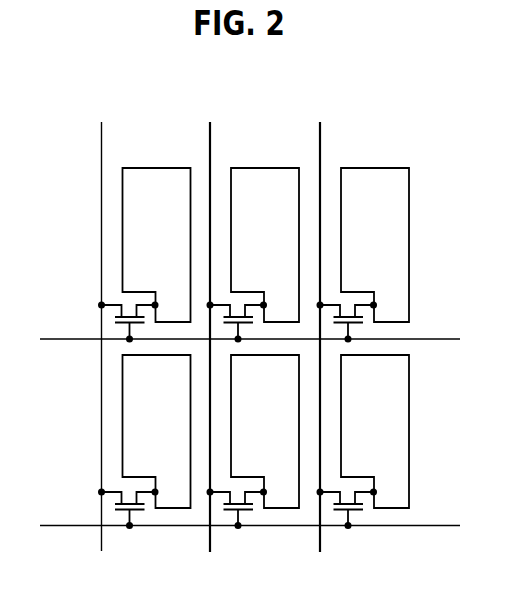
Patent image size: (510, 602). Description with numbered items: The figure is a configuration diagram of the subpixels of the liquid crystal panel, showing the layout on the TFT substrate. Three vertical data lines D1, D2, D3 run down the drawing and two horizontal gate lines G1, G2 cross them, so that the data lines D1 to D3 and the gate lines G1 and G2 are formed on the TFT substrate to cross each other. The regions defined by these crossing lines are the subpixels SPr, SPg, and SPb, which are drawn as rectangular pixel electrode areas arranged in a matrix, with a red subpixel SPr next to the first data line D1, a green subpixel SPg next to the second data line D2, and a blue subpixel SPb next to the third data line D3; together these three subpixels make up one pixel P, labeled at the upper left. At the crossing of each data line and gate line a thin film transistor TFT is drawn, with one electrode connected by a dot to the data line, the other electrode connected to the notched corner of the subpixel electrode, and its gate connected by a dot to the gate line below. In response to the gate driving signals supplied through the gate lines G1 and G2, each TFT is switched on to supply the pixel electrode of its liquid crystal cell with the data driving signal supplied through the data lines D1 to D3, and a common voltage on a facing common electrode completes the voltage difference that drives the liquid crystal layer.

The pixel P is at (36, 164).
The subpixel SPr is at (172, 247).
The subpixel SPg is at (284, 247).
The subpixel SPb is at (392, 247).
The thin film transistor TFT is at (113, 318).
The data line D1 is at (100, 324).
The data line D2 is at (210, 324).
The data line D3 is at (318, 324).
The gate line G1 is at (236, 340).
The gate line G2 is at (236, 522).